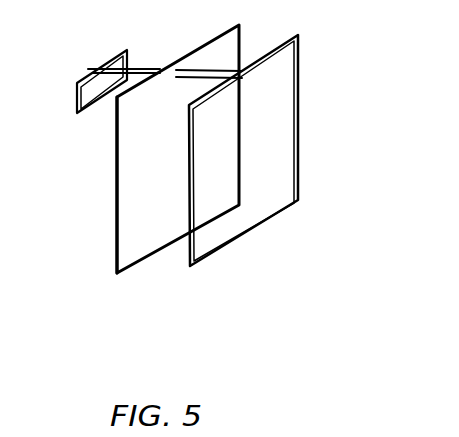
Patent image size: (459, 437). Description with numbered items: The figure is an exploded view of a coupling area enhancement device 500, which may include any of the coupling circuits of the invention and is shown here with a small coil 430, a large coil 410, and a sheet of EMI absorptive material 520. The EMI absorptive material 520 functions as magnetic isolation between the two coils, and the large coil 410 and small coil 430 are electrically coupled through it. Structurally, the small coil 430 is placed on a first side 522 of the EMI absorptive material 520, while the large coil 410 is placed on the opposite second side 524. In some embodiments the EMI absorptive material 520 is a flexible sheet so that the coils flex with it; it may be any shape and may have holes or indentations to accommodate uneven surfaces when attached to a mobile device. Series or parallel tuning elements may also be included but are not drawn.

The coupling area enhancement device 500 is at (348, 75).
The large coil 410 is at (300, 190).
The small coil 430 is at (78, 97).
The EMI absorptive material 520 is at (140, 262).
The first side 522 is at (110, 205).
The second side 524 is at (168, 221).